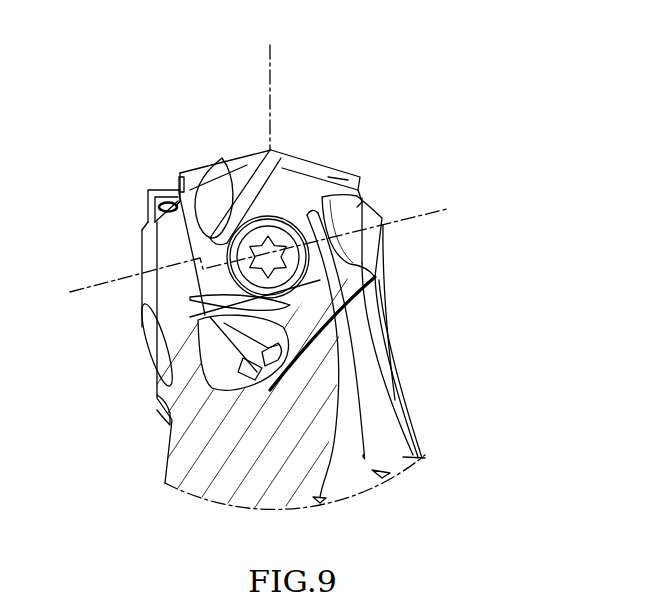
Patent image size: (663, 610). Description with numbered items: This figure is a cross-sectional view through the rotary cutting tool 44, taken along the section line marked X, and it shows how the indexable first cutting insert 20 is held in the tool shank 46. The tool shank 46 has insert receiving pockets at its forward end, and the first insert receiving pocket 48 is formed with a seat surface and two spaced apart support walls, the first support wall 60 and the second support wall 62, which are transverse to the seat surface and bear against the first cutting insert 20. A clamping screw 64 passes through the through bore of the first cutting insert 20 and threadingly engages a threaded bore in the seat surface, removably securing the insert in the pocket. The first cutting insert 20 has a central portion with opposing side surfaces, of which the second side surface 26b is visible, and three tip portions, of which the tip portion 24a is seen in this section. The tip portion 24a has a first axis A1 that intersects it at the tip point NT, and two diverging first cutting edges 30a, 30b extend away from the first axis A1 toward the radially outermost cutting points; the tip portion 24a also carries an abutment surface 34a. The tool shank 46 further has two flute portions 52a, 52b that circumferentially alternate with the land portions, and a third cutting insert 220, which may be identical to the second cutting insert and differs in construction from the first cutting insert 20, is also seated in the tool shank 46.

The first axis A1 is at (268, 82).
The section line X is at (83, 288).
The tip point NT is at (269, 146).
The first cutting insert 20 is at (222, 310).
The tip portion 24a is at (288, 160).
The second side surface 26b is at (312, 202).
The first cutting edge 30a is at (321, 162).
The first cutting edge 30b is at (247, 158).
The abutment surface 34a is at (362, 183).
The rotary cutting tool 44 is at (405, 292).
The tool shank 46 is at (215, 452).
The first insert receiving pocket 48 is at (210, 378).
The flute portion 52a is at (155, 423).
The flute portion 52b is at (357, 455).
The first support wall 60 is at (200, 197).
The second support wall 62 is at (300, 308).
The clamping screw 64 is at (256, 272).
The third cutting insert 220 is at (146, 182).